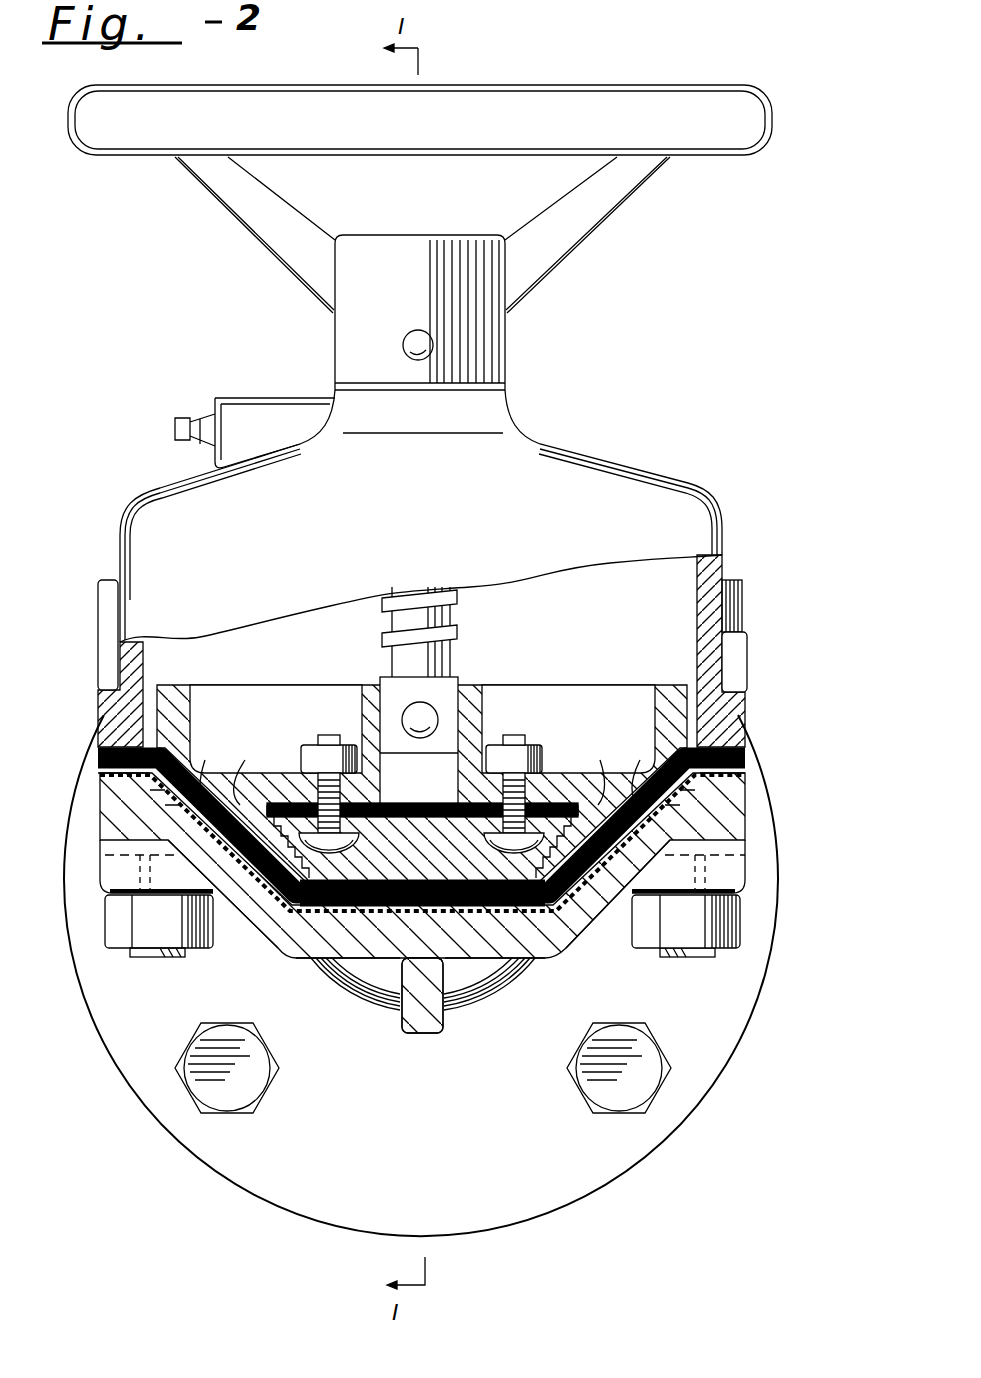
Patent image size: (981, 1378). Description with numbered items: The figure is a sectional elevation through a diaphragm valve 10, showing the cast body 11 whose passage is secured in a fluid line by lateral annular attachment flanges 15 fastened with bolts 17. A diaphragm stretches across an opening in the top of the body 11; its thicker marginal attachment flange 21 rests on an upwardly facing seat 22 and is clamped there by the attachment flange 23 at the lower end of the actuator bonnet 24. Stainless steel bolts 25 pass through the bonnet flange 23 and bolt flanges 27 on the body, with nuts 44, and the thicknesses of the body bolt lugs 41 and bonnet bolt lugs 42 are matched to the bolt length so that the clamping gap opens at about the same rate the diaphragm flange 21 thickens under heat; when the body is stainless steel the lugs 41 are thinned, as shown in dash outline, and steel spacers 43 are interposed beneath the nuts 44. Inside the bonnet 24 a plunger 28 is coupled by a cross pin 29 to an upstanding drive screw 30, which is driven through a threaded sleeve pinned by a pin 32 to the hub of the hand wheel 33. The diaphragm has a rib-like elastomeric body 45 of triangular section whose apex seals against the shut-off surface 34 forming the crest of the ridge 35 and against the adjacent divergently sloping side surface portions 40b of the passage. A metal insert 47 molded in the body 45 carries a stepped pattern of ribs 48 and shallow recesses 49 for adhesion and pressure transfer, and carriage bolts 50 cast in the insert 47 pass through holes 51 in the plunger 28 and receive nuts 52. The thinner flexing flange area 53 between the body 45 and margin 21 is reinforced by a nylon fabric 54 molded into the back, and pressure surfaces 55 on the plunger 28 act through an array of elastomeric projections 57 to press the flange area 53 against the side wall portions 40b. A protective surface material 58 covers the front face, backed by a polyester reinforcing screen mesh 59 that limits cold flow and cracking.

The diaphragm valve 10 is at (98, 400).
The body 11 is at (578, 940).
The lateral annular attachment flange 15 is at (722, 1060).
The bolts 17 is at (250, 1095).
The marginal attachment flange 21 is at (745, 762).
The upwardly facing seat 22 is at (745, 776).
The attachment flange 23 is at (98, 718).
The actuator bonnet 24 is at (722, 545).
The bolts 25 is at (98, 610).
The bolt flanges 27 is at (100, 795).
The plunger 28 is at (272, 798).
The cross pin 29 is at (412, 708).
The drive screw 30 is at (455, 630).
The pin 32 is at (404, 345).
The hand wheel 33 is at (600, 104).
The surface 34 is at (446, 1000).
The ridge 35 is at (385, 985).
The side surface portion 40b is at (247, 865).
The bolt lugs 41 is at (745, 855).
The bolt lugs 42 is at (747, 665).
The steel spacers 43 is at (100, 885).
The nuts 44 is at (745, 945).
The elastomeric body 45 is at (355, 938).
The insert 47 is at (340, 918).
The ribs 48 is at (596, 838).
The shallow recesses 49 is at (270, 905).
The carriage bolts 50 is at (329, 735).
The holes 51 is at (275, 760).
The nuts 52 is at (532, 752).
The flange area 53 is at (172, 805).
The nylon fabric 54 is at (396, 800).
The pressure surfaces 55 is at (152, 790).
The projections 57 is at (205, 798).
The protective surface material 58 is at (556, 926).
The reinforcing screen mesh 59 is at (512, 922).